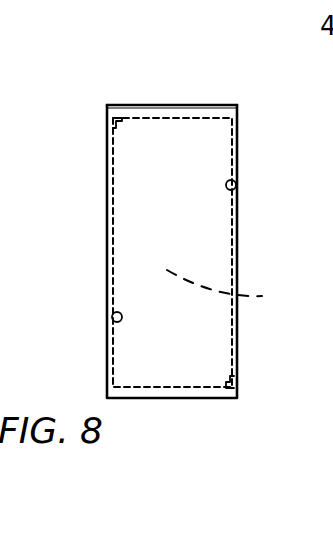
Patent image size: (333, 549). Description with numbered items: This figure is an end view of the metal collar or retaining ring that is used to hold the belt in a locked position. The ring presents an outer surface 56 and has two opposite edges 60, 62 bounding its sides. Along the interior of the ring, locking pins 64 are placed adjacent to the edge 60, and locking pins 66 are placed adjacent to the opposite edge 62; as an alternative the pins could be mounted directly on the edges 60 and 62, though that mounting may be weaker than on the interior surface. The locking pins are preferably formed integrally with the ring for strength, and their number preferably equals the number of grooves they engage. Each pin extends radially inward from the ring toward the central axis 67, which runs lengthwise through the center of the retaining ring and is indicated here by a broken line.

The outer surface 56 is at (205, 113).
The edge 60 is at (237, 238).
The edge 62 is at (108, 236).
The locking pins 64 is at (237, 188).
The locking pins 66 is at (110, 124).
The central axis 67 is at (235, 289).